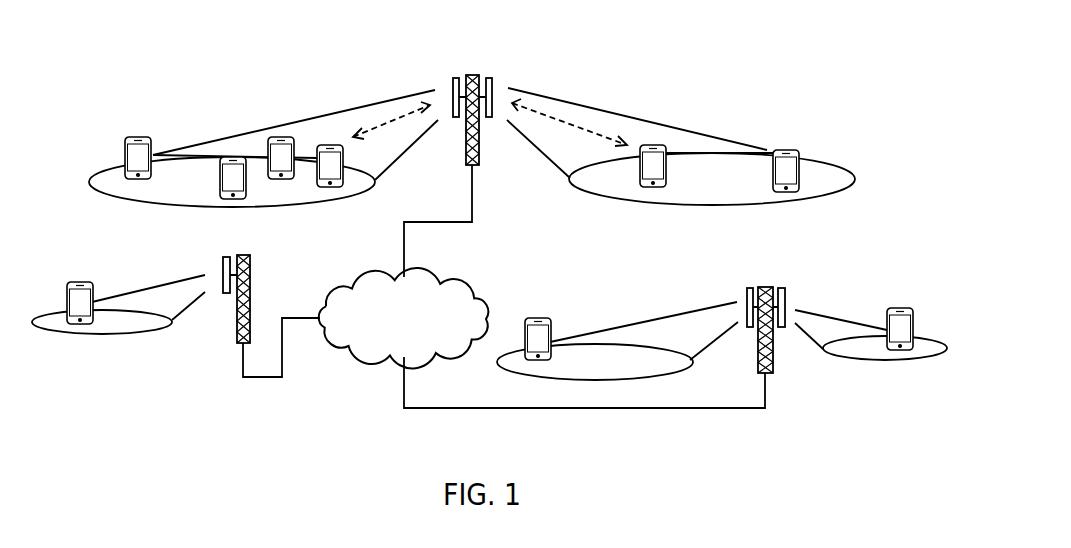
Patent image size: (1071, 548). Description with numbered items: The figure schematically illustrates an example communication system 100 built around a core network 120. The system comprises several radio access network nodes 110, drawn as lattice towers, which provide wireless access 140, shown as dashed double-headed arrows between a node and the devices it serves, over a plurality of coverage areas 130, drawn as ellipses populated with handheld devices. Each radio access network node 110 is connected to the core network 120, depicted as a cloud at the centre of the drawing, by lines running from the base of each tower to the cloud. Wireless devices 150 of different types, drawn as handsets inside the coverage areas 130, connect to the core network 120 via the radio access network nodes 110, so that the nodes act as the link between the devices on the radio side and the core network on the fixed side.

The communication system 100 is at (128, 59).
The radio access network node 110 is at (495, 78).
The core network 120 is at (404, 318).
The coverage area 130 is at (170, 203).
The wireless access 140 is at (393, 115).
The wireless device 150 is at (320, 190).